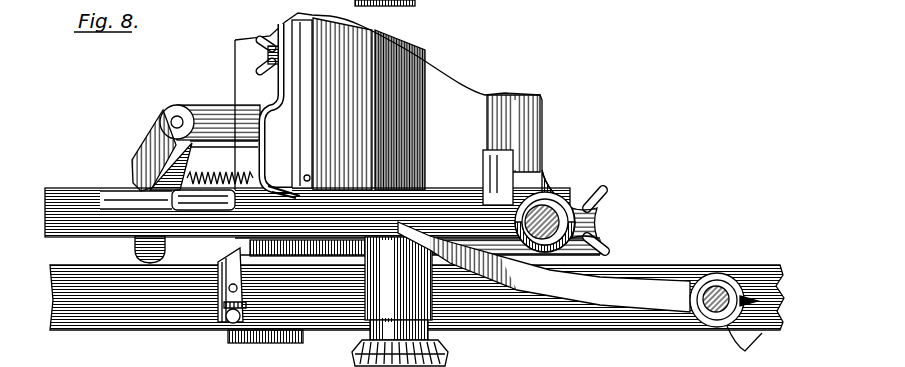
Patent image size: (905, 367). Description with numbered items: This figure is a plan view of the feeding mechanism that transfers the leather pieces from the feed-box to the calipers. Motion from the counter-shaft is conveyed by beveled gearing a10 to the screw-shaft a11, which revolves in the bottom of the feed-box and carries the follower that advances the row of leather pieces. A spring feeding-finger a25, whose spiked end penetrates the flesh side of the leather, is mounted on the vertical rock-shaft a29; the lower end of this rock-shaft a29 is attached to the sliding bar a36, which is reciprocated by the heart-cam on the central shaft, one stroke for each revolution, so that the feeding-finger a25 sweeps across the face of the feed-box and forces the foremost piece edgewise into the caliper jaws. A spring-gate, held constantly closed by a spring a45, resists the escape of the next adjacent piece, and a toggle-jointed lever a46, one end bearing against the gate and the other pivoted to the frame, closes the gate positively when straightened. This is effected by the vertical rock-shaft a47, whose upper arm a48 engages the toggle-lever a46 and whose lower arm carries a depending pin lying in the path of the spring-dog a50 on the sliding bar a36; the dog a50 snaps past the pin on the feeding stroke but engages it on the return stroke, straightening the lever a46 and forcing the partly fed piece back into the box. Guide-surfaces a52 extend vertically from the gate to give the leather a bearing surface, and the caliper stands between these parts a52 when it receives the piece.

The beveled gearing a10 is at (447, 358).
The screw-shaft a11 is at (423, 141).
The spring feeding-finger a25 is at (544, 267).
The vertical rock-shaft a29 is at (722, 283).
The sliding bar a36 is at (163, 318).
The spring a45 is at (286, 111).
The toggle-jointed lever a46 is at (122, 181).
The vertical rock-shaft a47 is at (175, 122).
The arm a48 is at (160, 135).
The spring-dog a50 is at (229, 278).
The guide-surface a52 is at (130, 213).